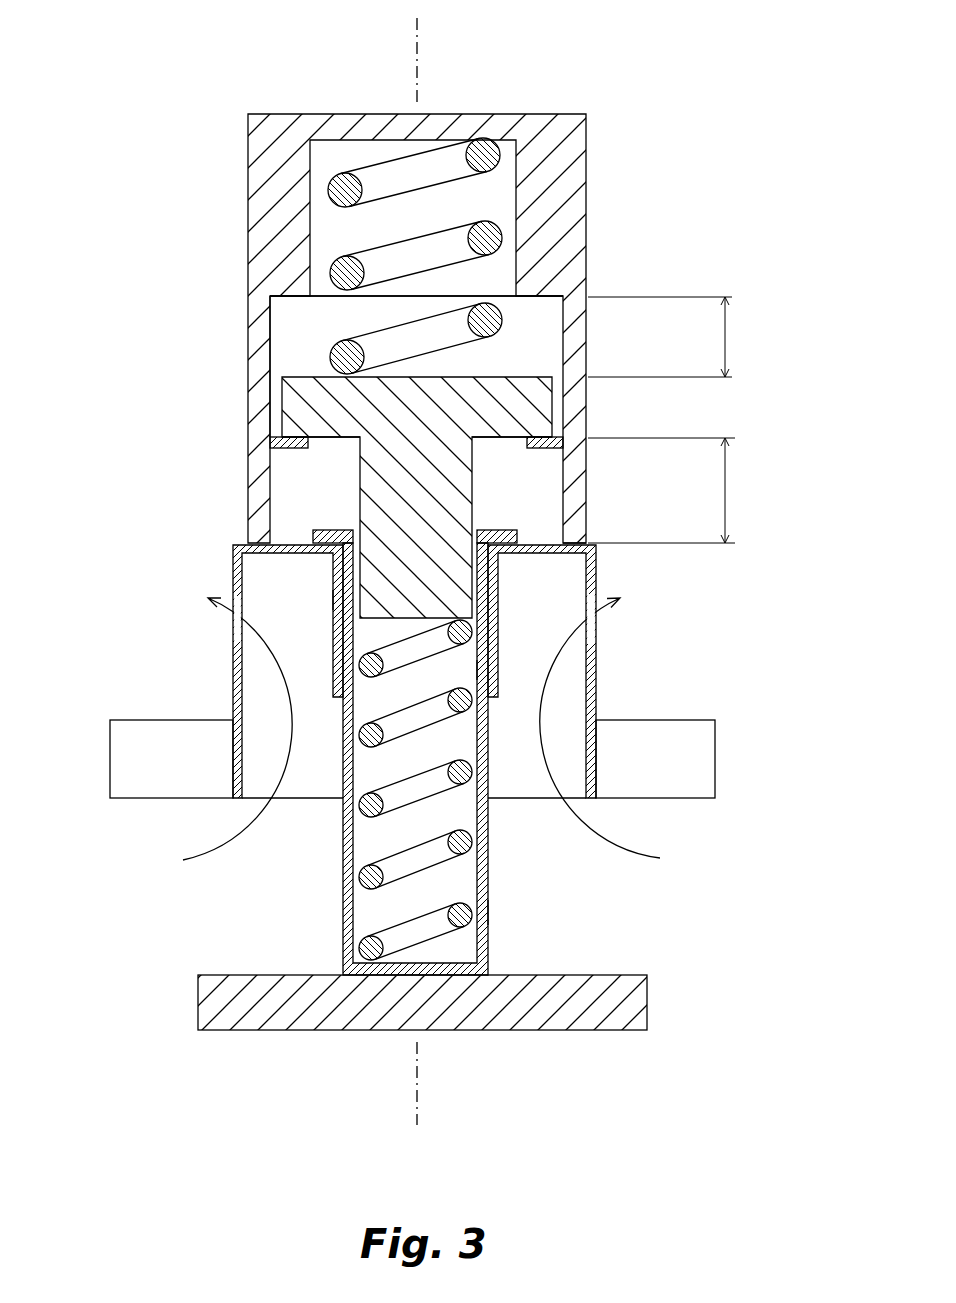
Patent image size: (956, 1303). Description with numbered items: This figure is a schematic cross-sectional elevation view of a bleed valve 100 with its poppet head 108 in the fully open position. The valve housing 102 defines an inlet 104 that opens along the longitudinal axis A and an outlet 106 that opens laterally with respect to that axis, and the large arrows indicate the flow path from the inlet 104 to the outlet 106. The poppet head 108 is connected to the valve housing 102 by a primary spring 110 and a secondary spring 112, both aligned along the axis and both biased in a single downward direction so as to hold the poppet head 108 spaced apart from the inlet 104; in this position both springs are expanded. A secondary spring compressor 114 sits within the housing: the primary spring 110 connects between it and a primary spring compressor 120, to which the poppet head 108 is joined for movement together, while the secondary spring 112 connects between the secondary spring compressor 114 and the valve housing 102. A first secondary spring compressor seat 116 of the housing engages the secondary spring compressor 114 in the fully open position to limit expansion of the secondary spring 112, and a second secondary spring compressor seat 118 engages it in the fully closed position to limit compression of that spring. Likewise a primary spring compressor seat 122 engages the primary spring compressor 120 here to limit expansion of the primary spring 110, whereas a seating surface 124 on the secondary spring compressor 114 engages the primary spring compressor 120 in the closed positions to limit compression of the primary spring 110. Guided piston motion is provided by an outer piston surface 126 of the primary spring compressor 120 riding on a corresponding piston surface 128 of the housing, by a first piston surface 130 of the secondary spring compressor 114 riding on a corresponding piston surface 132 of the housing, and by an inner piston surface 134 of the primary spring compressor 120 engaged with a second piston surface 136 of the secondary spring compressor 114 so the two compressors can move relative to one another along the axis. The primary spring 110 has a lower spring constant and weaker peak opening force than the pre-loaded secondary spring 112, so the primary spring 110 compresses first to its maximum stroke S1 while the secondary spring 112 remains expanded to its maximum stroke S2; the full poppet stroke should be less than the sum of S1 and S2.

The bleed valve 100 is at (206, 59).
The valve housing 102 is at (270, 470).
The inlet 104 is at (233, 580).
The outlet 106 is at (202, 634).
The poppet head 108 is at (647, 990).
The primary spring 110 is at (488, 853).
The secondary spring 112 is at (425, 247).
The secondary spring compressor 114 is at (427, 463).
The first secondary spring compressor seat 116 is at (278, 448).
The second secondary spring compressor seat 118 is at (296, 314).
The primary spring compressor 120 is at (310, 870).
The primary spring compressor seat 122 is at (545, 542).
The seating surface 124 is at (498, 443).
The outer piston surface 126 is at (490, 912).
The piston surface 128 is at (358, 673).
The first piston surface 130 is at (270, 405).
The piston surface 132 is at (272, 372).
The inner piston surface 134 is at (468, 665).
The second piston surface 136 is at (372, 590).
The maximum stroke of the primary spring S1 is at (677, 490).
The maximum stroke of the secondary spring S2 is at (677, 337).